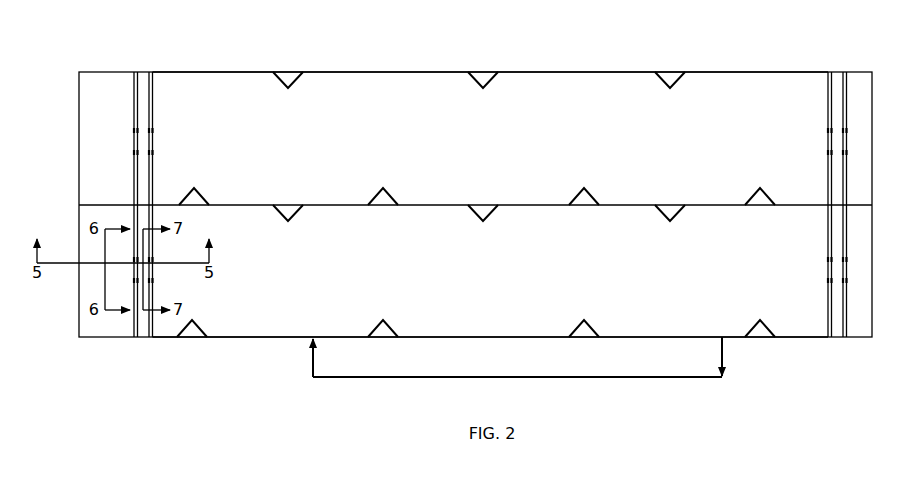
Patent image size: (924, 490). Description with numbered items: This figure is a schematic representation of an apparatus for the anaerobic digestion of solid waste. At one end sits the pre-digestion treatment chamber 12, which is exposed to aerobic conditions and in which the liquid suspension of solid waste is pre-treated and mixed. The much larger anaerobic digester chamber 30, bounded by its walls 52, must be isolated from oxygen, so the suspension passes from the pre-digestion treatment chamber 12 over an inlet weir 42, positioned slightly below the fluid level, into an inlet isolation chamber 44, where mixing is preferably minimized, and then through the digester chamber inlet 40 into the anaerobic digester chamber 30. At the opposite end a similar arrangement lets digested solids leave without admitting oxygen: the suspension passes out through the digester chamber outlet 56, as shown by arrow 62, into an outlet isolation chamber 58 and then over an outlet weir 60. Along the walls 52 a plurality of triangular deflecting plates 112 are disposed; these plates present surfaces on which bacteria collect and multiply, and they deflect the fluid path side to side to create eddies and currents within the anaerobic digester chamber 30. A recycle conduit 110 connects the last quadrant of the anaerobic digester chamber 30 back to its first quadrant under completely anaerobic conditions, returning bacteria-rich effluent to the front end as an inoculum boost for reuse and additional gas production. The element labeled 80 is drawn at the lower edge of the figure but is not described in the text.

The pre-digestion treatment chamber 12 is at (103, 157).
The anaerobic digester chamber 30 is at (507, 263).
The digester chamber inlet 40 is at (152, 143).
The inlet weir 42 is at (134, 137).
The inlet isolation chamber 44 is at (143, 78).
The walls 52 is at (230, 72).
The digester chamber outlet 56 is at (827, 143).
The outlet isolation chamber 58 is at (837, 78).
The outlet weir 60 is at (848, 143).
The arrow 62 is at (857, 80).
The attachment member 80 is at (155, 488).
The recycle conduit 110 is at (659, 378).
The triangular deflecting plates 112 is at (302, 75).